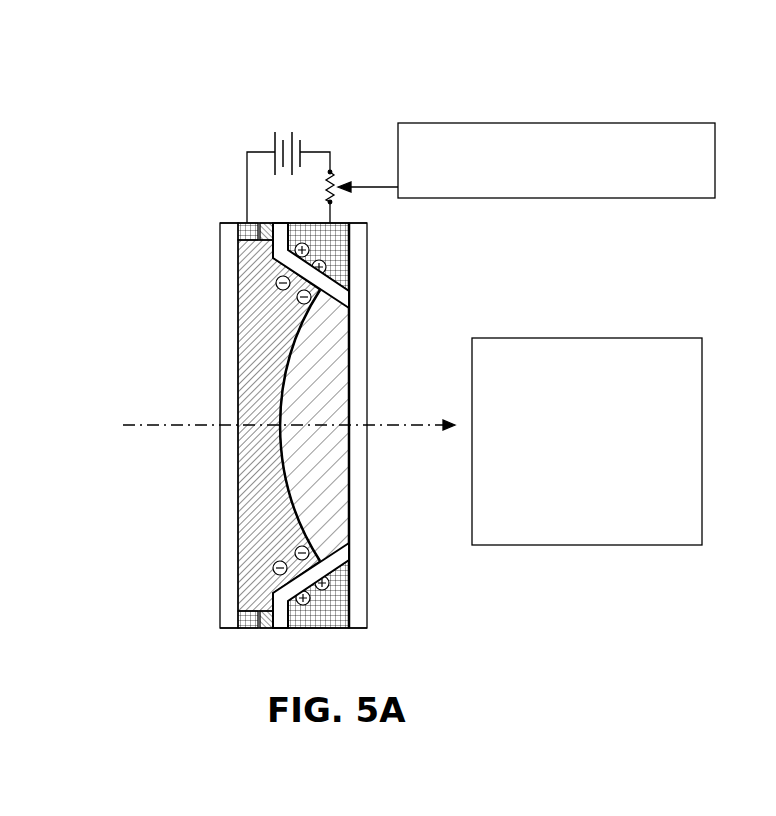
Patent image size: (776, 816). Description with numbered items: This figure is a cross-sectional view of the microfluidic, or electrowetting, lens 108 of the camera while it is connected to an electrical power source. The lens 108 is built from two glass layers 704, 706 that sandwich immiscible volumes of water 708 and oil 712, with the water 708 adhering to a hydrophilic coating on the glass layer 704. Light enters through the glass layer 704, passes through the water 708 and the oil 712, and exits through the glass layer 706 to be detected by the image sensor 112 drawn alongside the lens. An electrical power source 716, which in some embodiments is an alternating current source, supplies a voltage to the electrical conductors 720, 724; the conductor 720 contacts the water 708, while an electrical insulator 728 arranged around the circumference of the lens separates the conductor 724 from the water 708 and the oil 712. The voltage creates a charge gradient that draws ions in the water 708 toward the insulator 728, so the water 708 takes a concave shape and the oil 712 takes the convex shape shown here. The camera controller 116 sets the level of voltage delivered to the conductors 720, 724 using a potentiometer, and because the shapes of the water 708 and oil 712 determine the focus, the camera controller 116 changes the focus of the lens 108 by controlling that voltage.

The lens 108 is at (198, 615).
The image sensor 112 is at (535, 545).
The camera controller 116 is at (607, 123).
The glass layer 704 is at (228, 222).
The glass layer 706 is at (367, 326).
The water 708 is at (260, 353).
The oil 712 is at (330, 387).
The electrical power source 716 is at (292, 131).
The electrical conductor 720 is at (244, 222).
The electrical conductor 724 is at (342, 223).
The electrical insulator 728 is at (347, 300).